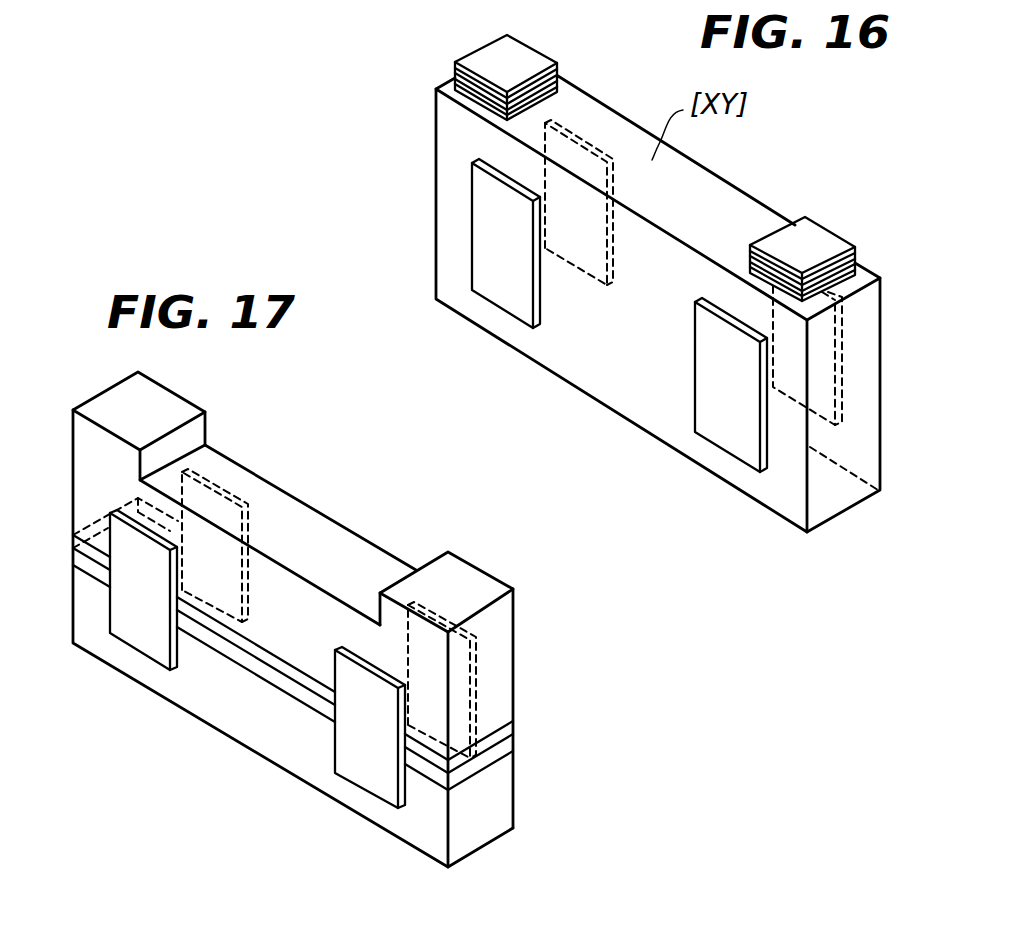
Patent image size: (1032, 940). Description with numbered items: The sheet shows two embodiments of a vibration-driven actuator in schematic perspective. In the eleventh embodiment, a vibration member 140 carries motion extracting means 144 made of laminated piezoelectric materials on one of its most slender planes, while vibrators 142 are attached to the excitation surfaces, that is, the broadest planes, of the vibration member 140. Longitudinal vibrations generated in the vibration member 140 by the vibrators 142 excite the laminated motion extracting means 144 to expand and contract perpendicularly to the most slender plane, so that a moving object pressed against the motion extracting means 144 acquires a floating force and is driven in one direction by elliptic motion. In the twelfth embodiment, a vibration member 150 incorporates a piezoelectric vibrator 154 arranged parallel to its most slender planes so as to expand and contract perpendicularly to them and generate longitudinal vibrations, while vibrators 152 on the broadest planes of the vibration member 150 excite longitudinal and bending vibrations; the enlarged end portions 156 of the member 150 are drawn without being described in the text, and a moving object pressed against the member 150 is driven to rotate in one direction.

In FIG. 16, the vibration member 140 is at (695, 198).
In FIG. 16, the vibrators 142 is at (590, 267).
In FIG. 16, the motion extracting means 144 is at (526, 65).
In FIG. 17, the vibration member 150 is at (343, 540).
In FIG. 17, the vibrators 152 is at (227, 602).
In FIG. 17, the vibrator 154 is at (300, 685).
In FIG. 17, the end blocks 156 is at (160, 410).